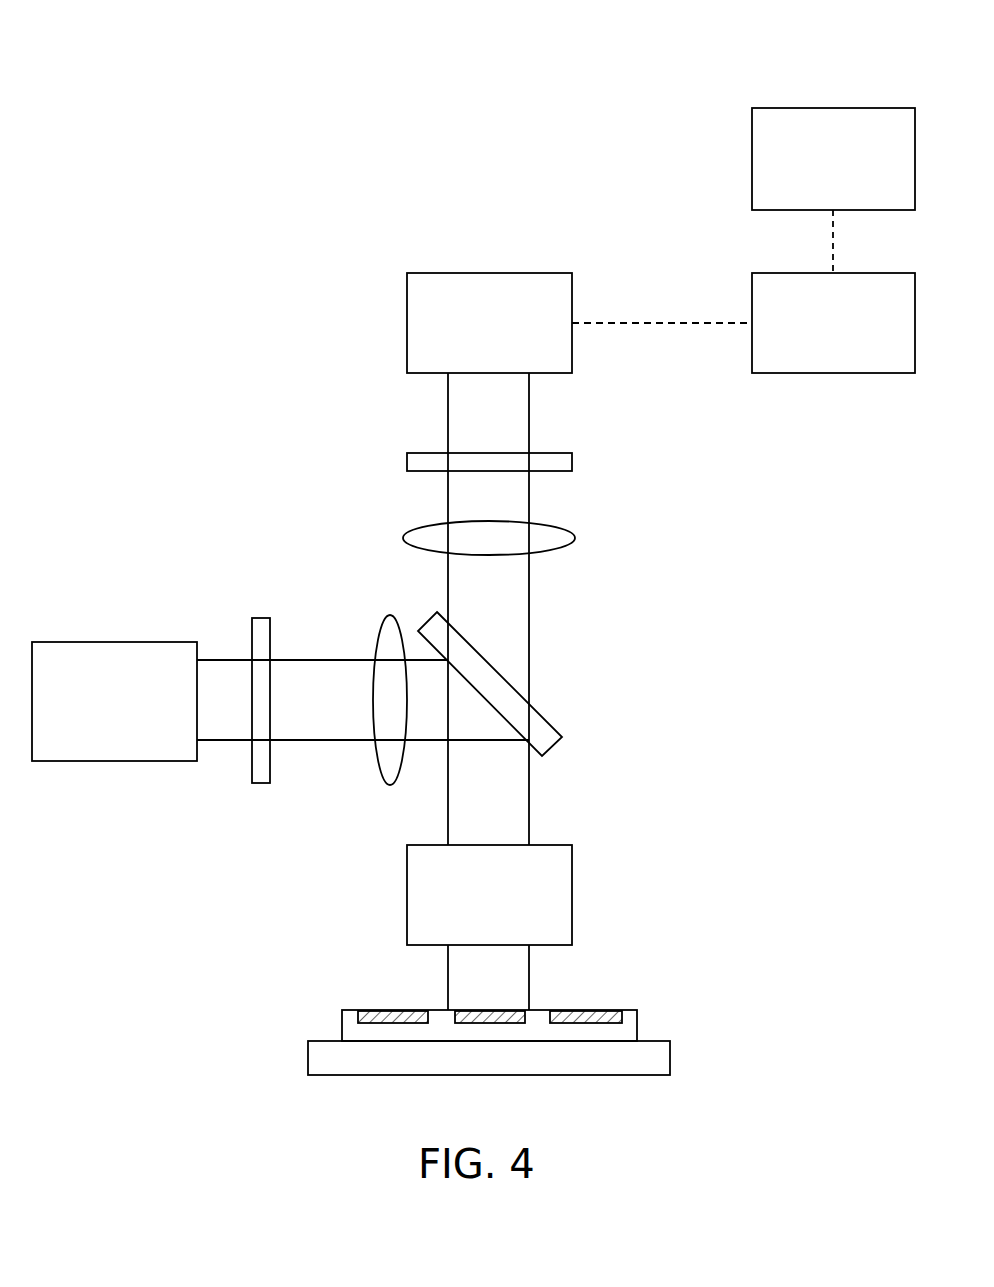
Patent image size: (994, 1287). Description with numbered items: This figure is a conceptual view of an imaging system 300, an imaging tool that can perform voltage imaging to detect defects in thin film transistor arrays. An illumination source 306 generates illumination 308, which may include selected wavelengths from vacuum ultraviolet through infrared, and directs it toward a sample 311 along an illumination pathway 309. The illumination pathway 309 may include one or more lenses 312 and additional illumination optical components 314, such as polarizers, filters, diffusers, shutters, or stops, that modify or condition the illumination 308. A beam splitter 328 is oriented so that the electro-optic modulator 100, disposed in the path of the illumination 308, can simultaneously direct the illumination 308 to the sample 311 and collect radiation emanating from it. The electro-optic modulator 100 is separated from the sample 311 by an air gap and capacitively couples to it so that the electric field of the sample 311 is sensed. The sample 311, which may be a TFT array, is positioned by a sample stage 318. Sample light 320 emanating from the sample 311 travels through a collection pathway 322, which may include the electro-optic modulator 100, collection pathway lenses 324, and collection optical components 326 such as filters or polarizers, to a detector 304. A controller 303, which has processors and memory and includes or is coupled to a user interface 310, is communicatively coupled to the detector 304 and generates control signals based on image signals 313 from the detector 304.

The imaging system 300 is at (473, 548).
The detector 304 is at (489, 323).
The user interface 310 is at (833, 159).
The controller 303 is at (833, 291).
The image signals 313 is at (658, 323).
The illumination source 306 is at (114, 701).
The electro-optic modulator 100 is at (489, 895).
The collection optical components 326 is at (407, 462).
The collection pathway lenses 324 is at (555, 527).
The collection pathway 322 is at (553, 607).
The sample light 320 is at (530, 982).
The illumination pathway 309 is at (323, 607).
The illumination 308 is at (222, 660).
The illumination optical components 314 is at (258, 783).
The lenses 312 is at (390, 782).
The beam splitter 328 is at (545, 720).
The sample 311 is at (340, 1030).
The sample stage 318 is at (306, 1055).